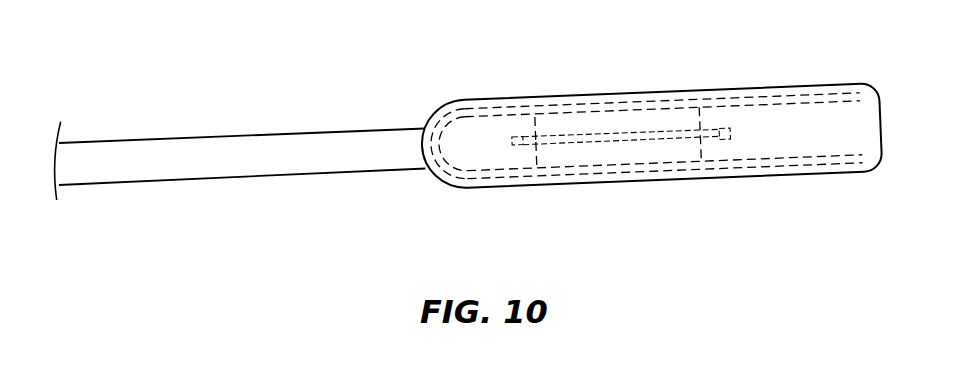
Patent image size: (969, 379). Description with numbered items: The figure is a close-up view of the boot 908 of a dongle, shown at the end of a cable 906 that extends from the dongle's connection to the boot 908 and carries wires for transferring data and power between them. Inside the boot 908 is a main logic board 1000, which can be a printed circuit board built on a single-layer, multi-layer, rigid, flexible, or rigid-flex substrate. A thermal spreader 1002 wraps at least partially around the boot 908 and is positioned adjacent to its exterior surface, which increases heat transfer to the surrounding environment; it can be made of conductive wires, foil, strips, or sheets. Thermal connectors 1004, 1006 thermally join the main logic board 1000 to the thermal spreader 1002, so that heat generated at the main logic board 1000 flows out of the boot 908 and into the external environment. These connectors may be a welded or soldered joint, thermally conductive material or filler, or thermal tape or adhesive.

The cable 906 is at (240, 136).
The boot 908 is at (795, 86).
The main logic board 1000 is at (719, 140).
The thermal spreader 1002 is at (664, 101).
The thermal connector 1004 is at (535, 122).
The thermal connector 1006 is at (535, 157).